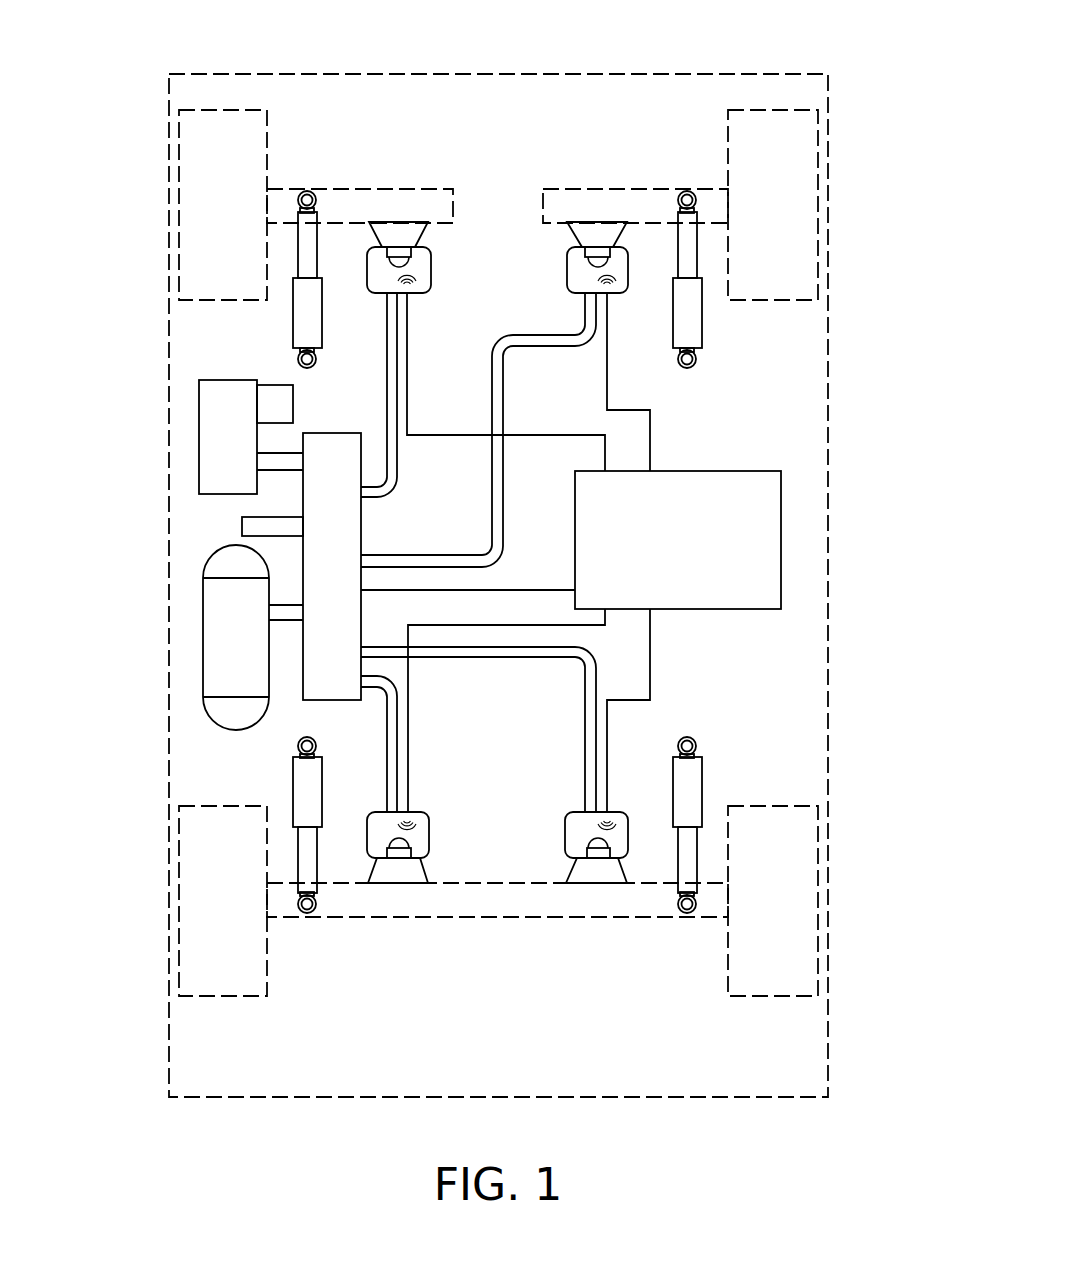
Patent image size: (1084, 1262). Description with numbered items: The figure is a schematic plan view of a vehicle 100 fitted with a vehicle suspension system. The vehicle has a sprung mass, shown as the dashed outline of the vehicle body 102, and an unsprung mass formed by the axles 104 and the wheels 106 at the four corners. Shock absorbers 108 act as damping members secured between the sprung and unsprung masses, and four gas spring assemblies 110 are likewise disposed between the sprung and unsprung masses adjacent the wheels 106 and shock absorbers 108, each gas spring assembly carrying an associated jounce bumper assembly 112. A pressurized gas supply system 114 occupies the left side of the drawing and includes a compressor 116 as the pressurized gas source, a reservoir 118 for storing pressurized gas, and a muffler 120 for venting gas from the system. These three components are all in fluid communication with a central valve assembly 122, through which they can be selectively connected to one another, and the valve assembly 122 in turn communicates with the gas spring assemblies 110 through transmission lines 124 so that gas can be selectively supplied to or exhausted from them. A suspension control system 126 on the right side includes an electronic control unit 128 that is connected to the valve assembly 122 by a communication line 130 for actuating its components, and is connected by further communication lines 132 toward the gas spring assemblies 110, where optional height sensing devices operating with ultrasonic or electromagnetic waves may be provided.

The vehicle 100 is at (850, 86).
The vehicle body 102 is at (686, 70).
The axles 104 is at (360, 217).
The wheels 106 is at (200, 160).
The shock absorbers 108 is at (300, 330).
The gas spring assemblies 110 is at (514, 529).
The jounce bumper assembly 112 is at (428, 272).
The pressurized gas supply system 114 is at (265, 555).
The compressor 116 is at (205, 415).
The reservoir 118 is at (210, 660).
The muffler 120 is at (250, 526).
The valve assembly 122 is at (350, 528).
The transmission lines 124 is at (386, 400).
The suspension control system 126 is at (627, 552).
The electronic control unit 128 is at (783, 530).
The communication line 130 is at (540, 588).
The communication lines 132 is at (520, 433).